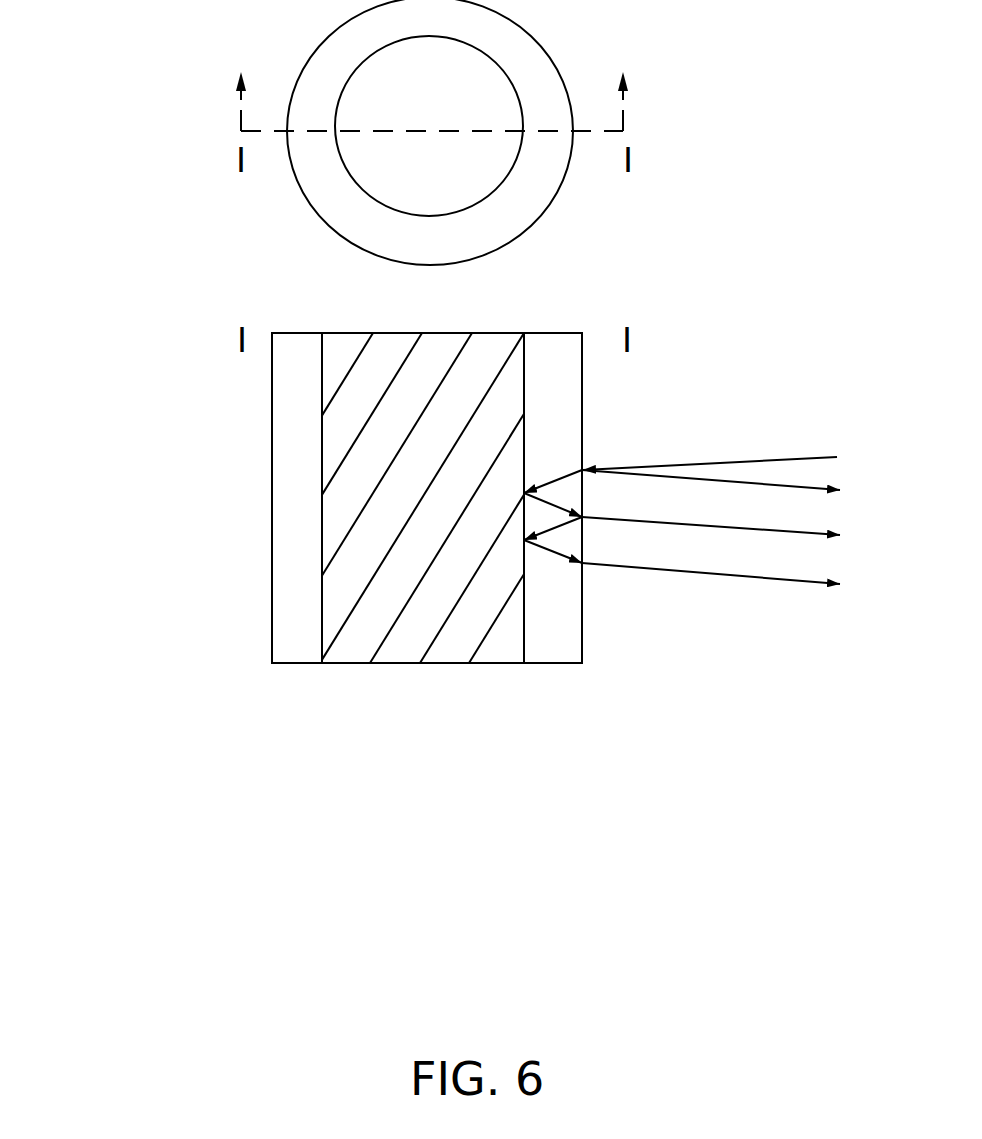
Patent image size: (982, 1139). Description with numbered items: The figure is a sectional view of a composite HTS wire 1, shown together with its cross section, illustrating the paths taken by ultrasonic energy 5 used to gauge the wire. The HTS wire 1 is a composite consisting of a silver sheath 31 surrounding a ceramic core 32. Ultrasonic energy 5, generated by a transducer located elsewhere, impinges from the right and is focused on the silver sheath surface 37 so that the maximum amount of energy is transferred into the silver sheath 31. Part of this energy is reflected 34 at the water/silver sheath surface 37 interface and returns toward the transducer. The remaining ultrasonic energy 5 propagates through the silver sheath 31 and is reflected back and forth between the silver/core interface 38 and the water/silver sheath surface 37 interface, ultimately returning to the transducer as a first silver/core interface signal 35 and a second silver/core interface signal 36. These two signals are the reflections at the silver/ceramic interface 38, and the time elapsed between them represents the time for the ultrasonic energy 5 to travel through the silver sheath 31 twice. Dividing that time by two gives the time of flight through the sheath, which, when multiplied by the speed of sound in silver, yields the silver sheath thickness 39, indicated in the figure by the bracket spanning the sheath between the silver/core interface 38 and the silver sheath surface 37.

The HTS wire 1 is at (430, 132).
The ultrasonic energy 5 is at (742, 458).
The silver sheath 31 is at (293, 577).
The ceramic core 32 is at (400, 417).
The reflected energy 34 is at (773, 486).
The first silver/core interface signal 35 is at (693, 527).
The second silver/core interface signal 36 is at (733, 575).
The silver sheath surface 37 is at (272, 458).
The silver/core interface 38 is at (524, 640).
The silver sheath thickness 39 is at (532, 446).